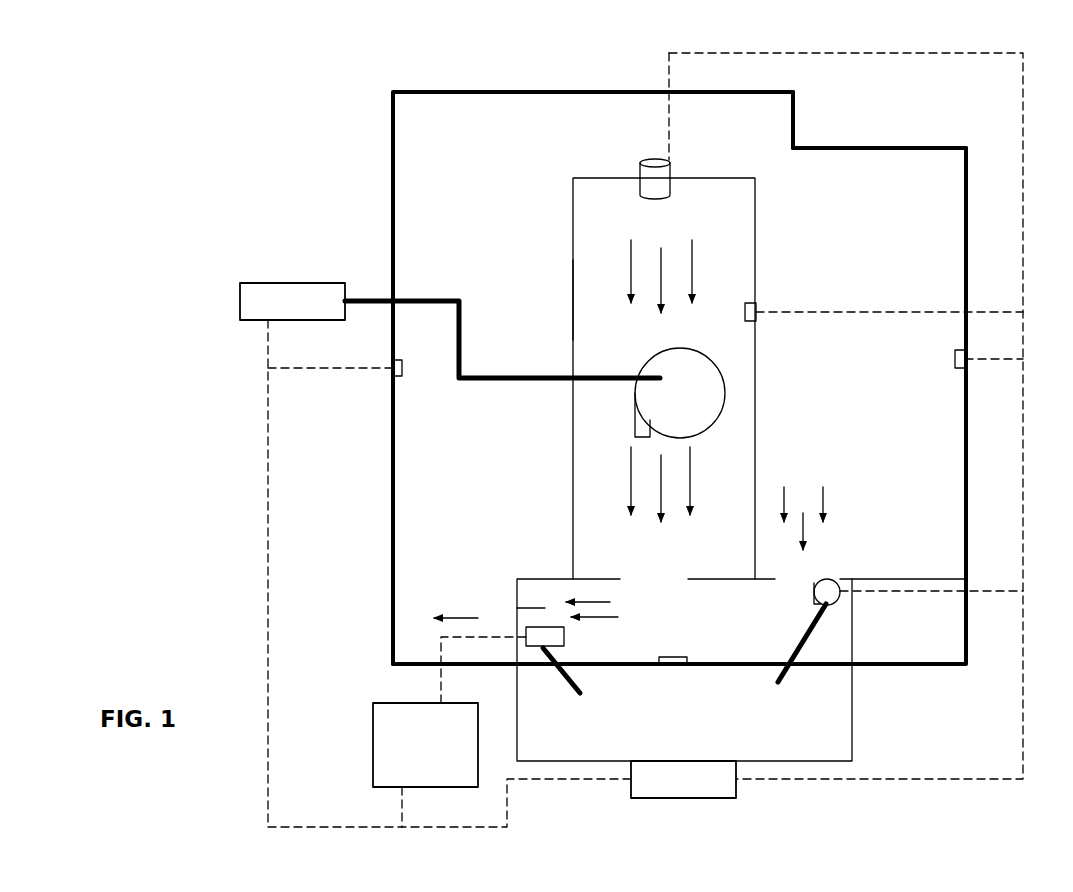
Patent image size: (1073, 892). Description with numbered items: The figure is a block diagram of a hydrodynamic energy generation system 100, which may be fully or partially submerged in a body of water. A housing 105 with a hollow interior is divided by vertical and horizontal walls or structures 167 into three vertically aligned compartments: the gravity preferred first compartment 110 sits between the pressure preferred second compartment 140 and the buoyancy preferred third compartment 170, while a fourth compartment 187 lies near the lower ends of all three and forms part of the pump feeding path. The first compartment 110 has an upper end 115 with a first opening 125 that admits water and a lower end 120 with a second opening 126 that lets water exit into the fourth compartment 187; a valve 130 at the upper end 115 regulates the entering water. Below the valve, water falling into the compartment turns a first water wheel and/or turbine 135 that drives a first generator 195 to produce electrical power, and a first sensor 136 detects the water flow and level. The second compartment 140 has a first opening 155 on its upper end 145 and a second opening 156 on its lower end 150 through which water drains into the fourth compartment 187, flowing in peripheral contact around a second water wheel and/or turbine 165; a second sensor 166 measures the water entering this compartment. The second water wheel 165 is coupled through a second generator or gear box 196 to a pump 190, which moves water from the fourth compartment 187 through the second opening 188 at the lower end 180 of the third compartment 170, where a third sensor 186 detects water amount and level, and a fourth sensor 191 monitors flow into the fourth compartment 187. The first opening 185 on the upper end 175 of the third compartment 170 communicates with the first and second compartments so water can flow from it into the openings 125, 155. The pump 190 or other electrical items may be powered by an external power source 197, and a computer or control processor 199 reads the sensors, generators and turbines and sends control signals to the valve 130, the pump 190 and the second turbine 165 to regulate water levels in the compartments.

The hydrodynamic energy generation system 100 is at (240, 105).
The housing 105 is at (470, 92).
The first vertically aligned compartment 110 is at (584, 214).
The upper end of the first compartment 115 is at (618, 193).
The lower end of the first compartment 120 is at (591, 573).
The first opening of the first compartment 125 is at (666, 200).
The second opening of the first compartment 126 is at (668, 574).
The valve 130 is at (665, 184).
The first water wheel and/or turbine 135 is at (709, 433).
The first sensor 136 is at (756, 322).
The second vertically aligned compartment 140 is at (948, 447).
The upper end of the second compartment 145 is at (924, 162).
The lower end of the second compartment 150 is at (869, 578).
The first opening of the second compartment 155 is at (780, 172).
The second opening of the second compartment 156 is at (799, 581).
The second water wheel and/or turbine 165 is at (840, 599).
The second sensor 166 is at (955, 361).
The vertical and horizontal walls or structures 167 is at (570, 312).
The third vertically aligned compartment 170 is at (412, 516).
The upper end of the third compartment 175 is at (412, 229).
The lower end of the third compartment 180 is at (421, 661).
The first opening of the third compartment 185 is at (469, 171).
The third sensor 186 is at (402, 377).
The fourth compartment 187 is at (823, 638).
The second opening of the third compartment 188 is at (516, 626).
The pump 190 is at (552, 655).
The fourth sensor 191 is at (688, 660).
The first generator 195 is at (270, 283).
The second generator or gear box 196 is at (516, 376).
The external power source 197 is at (373, 756).
The computer or control processor 199 is at (658, 799).